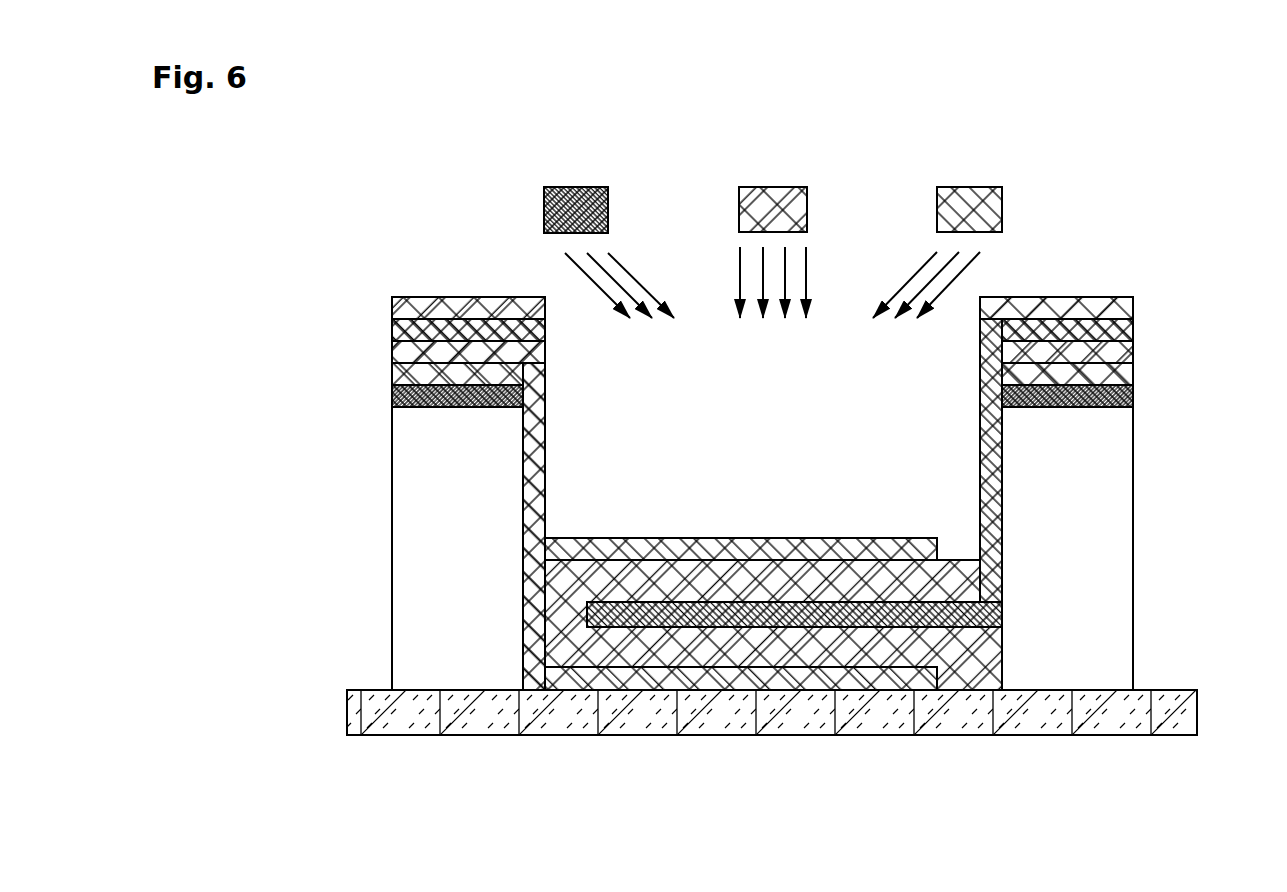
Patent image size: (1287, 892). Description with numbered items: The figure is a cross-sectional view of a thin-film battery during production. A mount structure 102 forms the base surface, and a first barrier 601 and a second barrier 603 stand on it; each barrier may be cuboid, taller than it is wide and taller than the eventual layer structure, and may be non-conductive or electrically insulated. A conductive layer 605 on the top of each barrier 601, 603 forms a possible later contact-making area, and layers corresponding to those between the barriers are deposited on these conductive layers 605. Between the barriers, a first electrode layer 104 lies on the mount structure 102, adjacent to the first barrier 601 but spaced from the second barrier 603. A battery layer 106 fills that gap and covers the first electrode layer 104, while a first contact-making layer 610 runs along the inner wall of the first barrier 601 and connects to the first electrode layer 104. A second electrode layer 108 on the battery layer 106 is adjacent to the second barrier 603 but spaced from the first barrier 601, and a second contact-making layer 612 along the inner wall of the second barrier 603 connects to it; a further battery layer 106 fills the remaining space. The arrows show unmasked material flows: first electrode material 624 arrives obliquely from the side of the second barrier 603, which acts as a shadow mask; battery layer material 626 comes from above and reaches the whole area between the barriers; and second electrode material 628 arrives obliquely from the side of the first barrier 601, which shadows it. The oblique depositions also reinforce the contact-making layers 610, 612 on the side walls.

The mount structure 102 is at (365, 718).
The first electrode layer 104 is at (593, 680).
The battery layer 106 is at (990, 655).
The second electrode layer 108 is at (777, 618).
The first barrier 601 is at (392, 555).
The second barrier 603 is at (1123, 602).
The conductive layer 605 is at (398, 395).
The first contact-making layer 610 is at (528, 617).
The second contact-making layer 612 is at (997, 533).
The first electrode material 624 is at (985, 213).
The battery layer material 626 is at (781, 210).
The second electrode material 628 is at (557, 209).